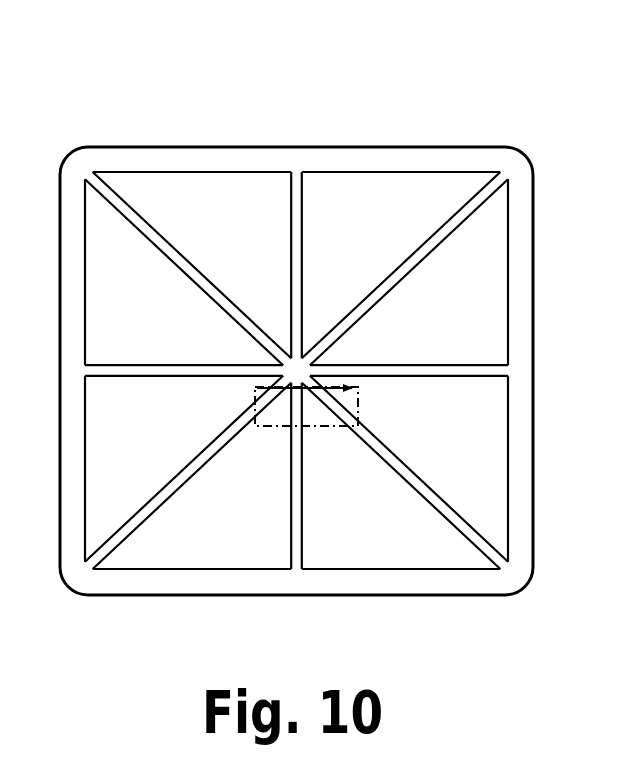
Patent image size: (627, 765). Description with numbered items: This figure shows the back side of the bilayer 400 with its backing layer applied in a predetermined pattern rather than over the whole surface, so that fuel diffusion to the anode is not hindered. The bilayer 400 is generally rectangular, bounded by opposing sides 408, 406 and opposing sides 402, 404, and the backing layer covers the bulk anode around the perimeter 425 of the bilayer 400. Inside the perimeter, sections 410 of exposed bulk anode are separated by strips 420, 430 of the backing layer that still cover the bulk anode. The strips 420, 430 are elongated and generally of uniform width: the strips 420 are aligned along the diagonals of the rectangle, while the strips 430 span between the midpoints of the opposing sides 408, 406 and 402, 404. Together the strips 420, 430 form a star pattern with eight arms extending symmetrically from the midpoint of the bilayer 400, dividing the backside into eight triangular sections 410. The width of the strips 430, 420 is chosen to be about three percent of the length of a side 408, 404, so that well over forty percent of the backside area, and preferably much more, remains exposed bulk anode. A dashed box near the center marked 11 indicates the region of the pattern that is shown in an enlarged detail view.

The bilayer 400 is at (500, 76).
The side 402 is at (535, 287).
The side 404 is at (62, 230).
The side 406 is at (277, 597).
The side 408 is at (303, 146).
The perimeter 425 is at (520, 507).
The sections of exposed bulk anode 410 is at (375, 200).
The strips 420 is at (130, 212).
The strips 430 is at (460, 372).
The detail region of FIG. 11 is at (358, 417).